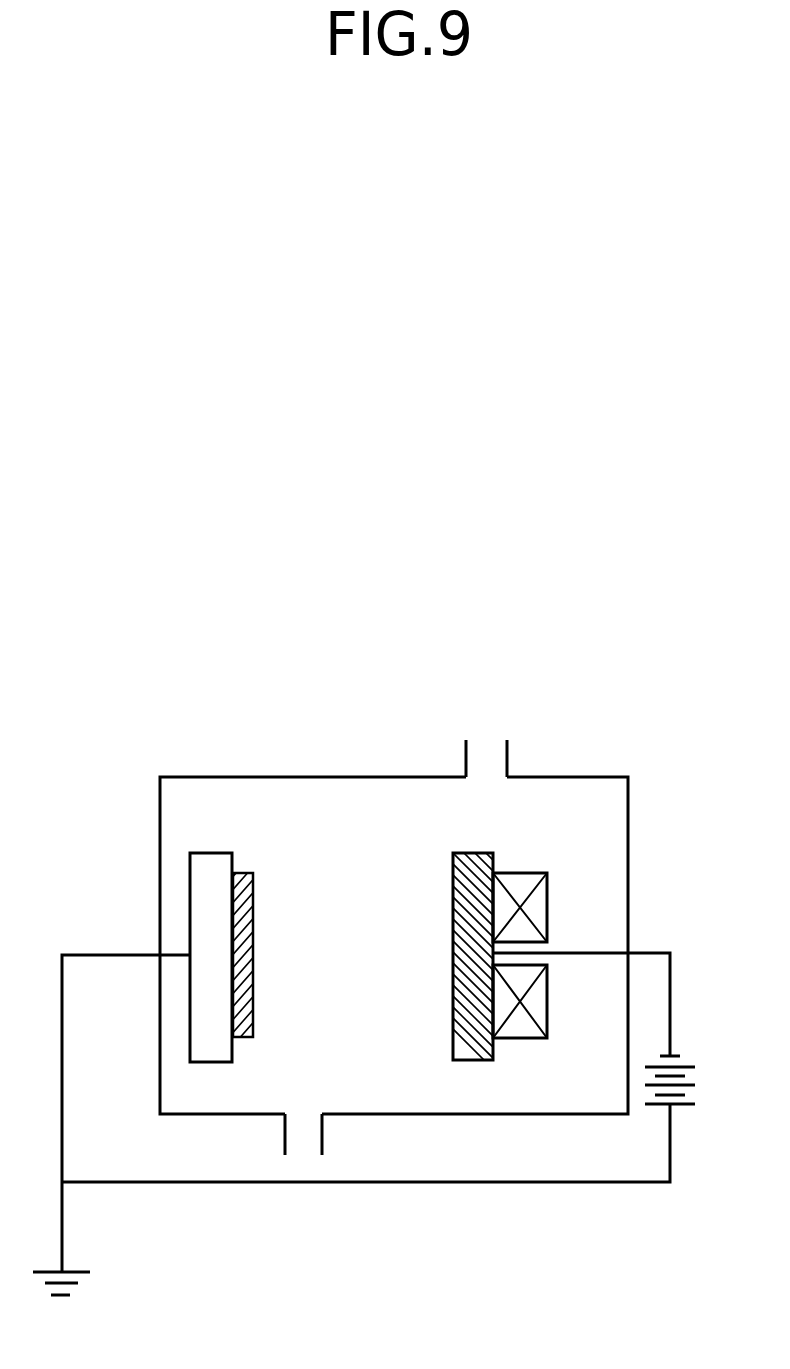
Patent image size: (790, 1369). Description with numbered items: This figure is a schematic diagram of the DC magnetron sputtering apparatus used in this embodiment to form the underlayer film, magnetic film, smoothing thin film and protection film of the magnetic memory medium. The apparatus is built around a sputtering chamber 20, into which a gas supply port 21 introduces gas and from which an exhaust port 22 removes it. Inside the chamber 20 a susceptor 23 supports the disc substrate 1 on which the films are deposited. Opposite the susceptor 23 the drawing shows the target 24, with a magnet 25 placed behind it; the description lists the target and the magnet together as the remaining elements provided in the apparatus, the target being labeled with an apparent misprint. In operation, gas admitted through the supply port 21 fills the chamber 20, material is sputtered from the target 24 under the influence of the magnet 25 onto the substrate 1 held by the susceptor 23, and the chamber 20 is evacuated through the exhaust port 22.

The thin film 1 is at (254, 874).
The vacuum chamber 20 is at (258, 776).
The gas supply port 21 is at (508, 753).
The exhaust port 22 is at (325, 1145).
The susceptor 23 is at (213, 852).
The target electrode 24 is at (478, 853).
The magnet 25 is at (547, 890).